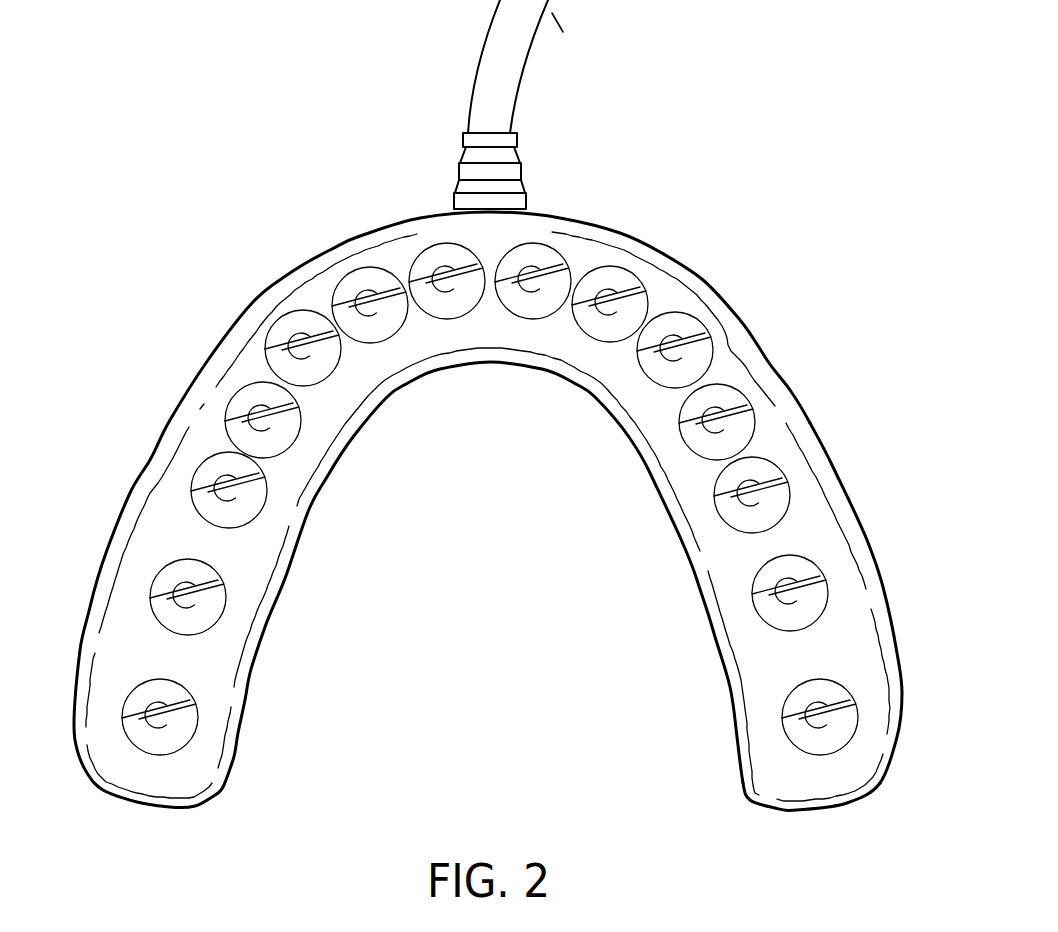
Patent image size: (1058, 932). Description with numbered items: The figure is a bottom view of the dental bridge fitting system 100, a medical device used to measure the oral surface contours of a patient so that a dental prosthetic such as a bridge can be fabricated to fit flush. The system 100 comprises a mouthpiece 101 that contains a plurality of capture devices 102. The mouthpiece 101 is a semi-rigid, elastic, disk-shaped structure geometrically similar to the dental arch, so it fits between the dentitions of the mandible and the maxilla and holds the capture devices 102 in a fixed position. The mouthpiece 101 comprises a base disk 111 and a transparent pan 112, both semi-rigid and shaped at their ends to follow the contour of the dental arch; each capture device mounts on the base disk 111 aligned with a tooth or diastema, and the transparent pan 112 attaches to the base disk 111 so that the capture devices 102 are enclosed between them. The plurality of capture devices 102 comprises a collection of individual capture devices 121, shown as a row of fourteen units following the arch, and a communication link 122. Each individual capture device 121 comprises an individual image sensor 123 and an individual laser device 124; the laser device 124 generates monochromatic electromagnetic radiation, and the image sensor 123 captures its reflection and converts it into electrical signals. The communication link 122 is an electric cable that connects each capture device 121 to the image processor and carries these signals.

The dental bridge fitting system 100 is at (292, 176).
The mouthpiece 101 is at (131, 488).
The plurality of capture devices 102 is at (617, 242).
The base disk 111 is at (830, 798).
The transparent pan 112 is at (830, 647).
The individual capture device 121 is at (810, 563).
The communication link 122 is at (521, 72).
The individual image sensor 123 is at (688, 343).
The individual laser device 124 is at (692, 315).